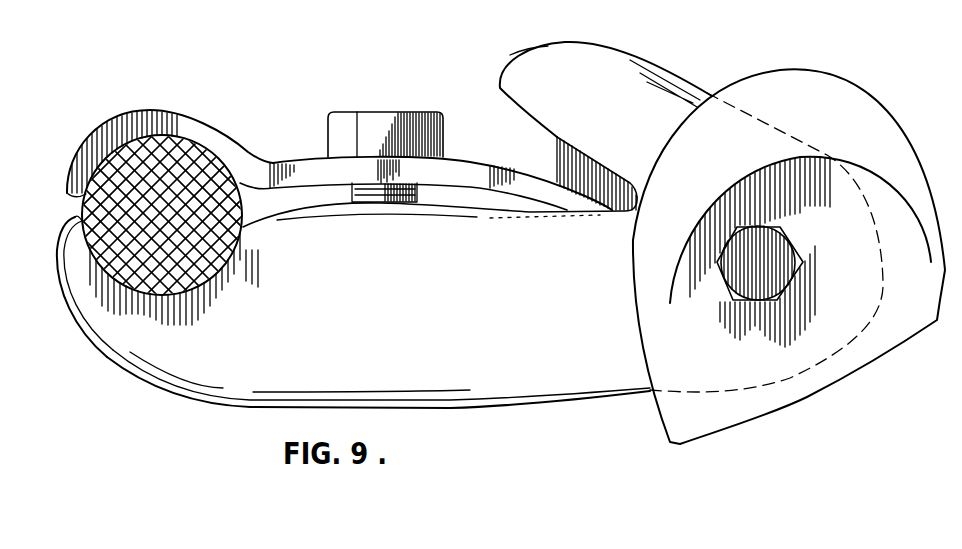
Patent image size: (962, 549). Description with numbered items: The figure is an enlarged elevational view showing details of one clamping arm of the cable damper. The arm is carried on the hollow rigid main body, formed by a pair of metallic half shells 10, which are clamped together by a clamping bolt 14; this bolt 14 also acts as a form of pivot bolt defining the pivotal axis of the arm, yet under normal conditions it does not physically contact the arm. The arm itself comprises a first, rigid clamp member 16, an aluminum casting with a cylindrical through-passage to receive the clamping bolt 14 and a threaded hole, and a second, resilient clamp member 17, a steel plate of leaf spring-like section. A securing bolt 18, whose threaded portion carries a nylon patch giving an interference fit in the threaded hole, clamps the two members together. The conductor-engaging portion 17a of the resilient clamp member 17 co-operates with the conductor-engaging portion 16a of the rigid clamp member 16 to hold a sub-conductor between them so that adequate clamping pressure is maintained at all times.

The half shell 10 is at (880, 337).
The clamping bolt 14 is at (783, 265).
The rigid clamp member 16 is at (552, 386).
The conductor-engaging portion 16a is at (90, 300).
The resilient clamp member 17 is at (297, 163).
The conductor-engaging portion 17a is at (160, 112).
The securing bolt 18 is at (384, 112).